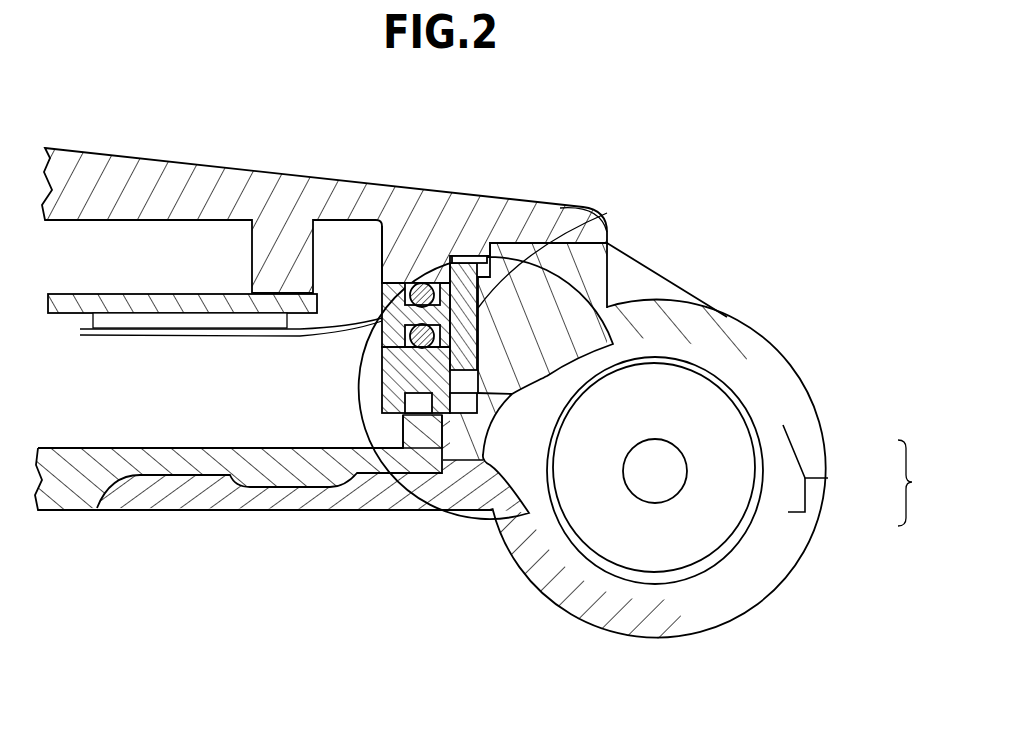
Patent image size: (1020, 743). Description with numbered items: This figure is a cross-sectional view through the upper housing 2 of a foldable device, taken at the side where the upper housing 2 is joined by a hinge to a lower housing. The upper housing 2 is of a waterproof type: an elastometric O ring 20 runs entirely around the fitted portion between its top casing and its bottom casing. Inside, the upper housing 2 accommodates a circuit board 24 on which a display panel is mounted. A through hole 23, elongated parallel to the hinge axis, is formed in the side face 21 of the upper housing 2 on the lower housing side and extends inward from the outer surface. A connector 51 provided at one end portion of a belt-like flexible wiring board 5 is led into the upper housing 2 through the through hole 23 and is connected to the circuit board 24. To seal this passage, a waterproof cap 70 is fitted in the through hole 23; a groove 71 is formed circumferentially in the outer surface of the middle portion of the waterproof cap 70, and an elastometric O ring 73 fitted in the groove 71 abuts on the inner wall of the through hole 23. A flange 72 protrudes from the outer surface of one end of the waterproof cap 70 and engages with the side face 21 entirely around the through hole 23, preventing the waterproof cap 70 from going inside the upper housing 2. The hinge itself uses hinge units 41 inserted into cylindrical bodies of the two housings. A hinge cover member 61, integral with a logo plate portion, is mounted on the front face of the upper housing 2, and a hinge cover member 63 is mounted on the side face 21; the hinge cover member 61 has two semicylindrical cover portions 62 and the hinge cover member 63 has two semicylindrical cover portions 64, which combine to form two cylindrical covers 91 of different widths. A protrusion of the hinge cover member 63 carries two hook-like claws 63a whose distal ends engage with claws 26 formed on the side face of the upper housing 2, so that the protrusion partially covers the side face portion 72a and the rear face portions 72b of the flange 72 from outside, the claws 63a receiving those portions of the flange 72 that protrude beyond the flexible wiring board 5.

The upper housing 2 is at (88, 165).
The flexible wiring board 5 is at (300, 340).
The elastometric O ring 20 is at (417, 407).
The side face 21 is at (462, 266).
The through hole 23 is at (383, 280).
The circuit board 24 is at (147, 302).
The claws 26 is at (498, 403).
The hinge units 41 is at (657, 483).
The connector 51 is at (268, 320).
The hinge cover member 61 is at (232, 505).
The semicylindrical cover portions 62 is at (808, 520).
The hinge cover member 63 is at (600, 278).
The hook-like claws 63a is at (463, 402).
The semicylindrical cover portions 64 is at (810, 460).
The waterproof cap 70 is at (412, 338).
The groove 71 is at (392, 397).
The flange 72 is at (484, 258).
The side face portion 72a is at (470, 400).
The rear face portions 72b is at (581, 207).
The elastometric O ring 73 is at (423, 283).
The cylindrical covers 91 is at (921, 483).